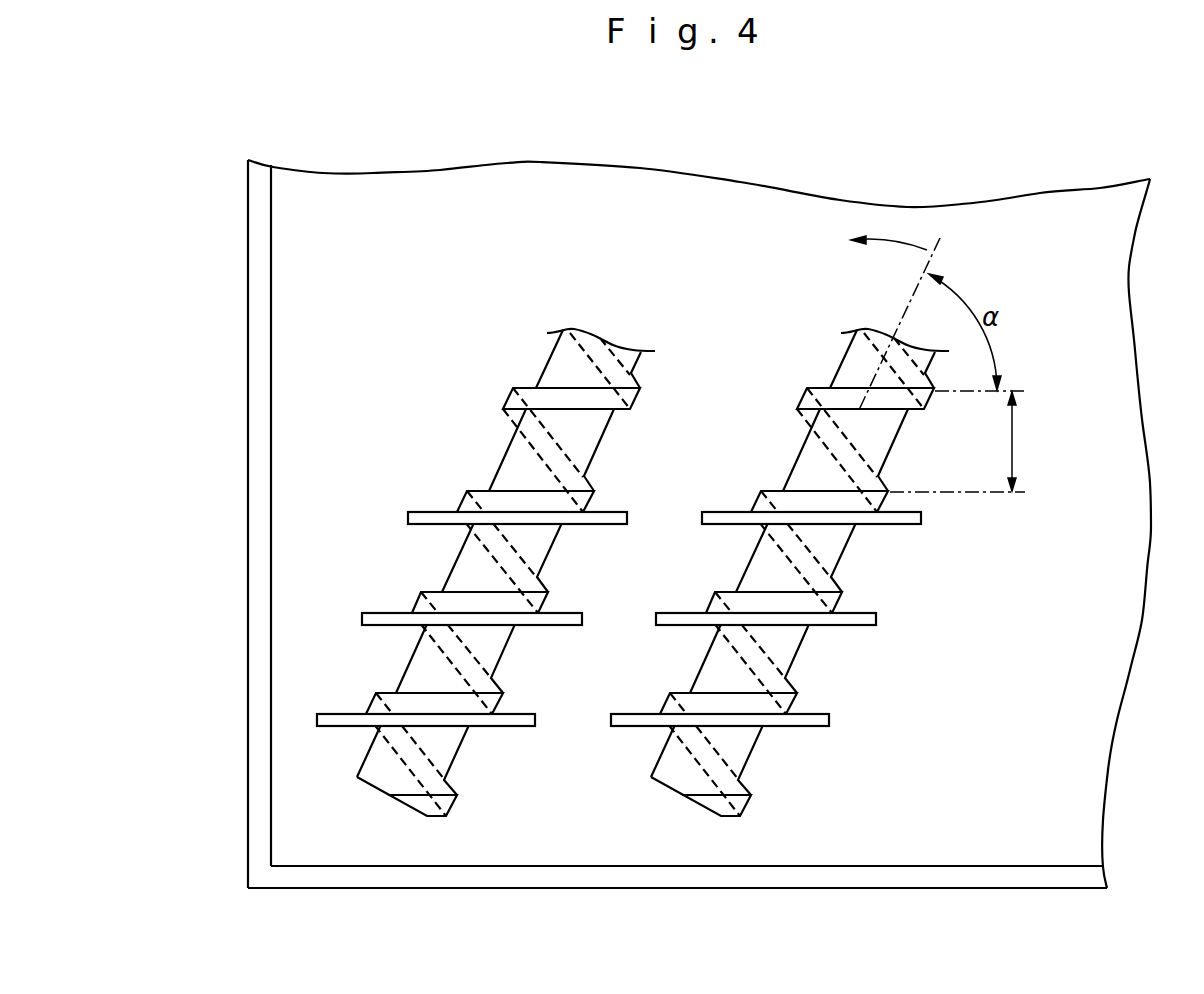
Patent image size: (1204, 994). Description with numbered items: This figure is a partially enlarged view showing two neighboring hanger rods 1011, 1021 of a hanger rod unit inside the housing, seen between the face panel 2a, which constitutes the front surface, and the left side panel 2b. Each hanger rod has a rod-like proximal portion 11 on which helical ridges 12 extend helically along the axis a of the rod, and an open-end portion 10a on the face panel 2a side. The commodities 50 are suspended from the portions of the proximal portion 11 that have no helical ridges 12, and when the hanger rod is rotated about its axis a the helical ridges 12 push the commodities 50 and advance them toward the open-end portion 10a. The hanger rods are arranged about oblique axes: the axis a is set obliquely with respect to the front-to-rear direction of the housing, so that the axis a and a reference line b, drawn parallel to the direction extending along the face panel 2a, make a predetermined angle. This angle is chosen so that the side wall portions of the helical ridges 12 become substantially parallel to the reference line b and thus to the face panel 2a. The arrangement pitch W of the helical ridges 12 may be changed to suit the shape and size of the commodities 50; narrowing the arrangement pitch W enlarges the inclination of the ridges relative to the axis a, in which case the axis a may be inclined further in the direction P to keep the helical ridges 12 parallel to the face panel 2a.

The hanger rod 1011 is at (578, 367).
The hanger rod 1021 is at (850, 372).
The open-end portion 10a is at (442, 755).
The rod-like proximal portion 11 is at (792, 660).
The helical ridges 12 is at (760, 511).
The commodities 50 is at (382, 612).
The face panel 2a is at (931, 876).
The left side panel 2b is at (252, 375).
The axis a is at (937, 250).
The reference line b is at (1015, 388).
The direction P is at (889, 230).
The arrangement pitch W is at (1026, 441).